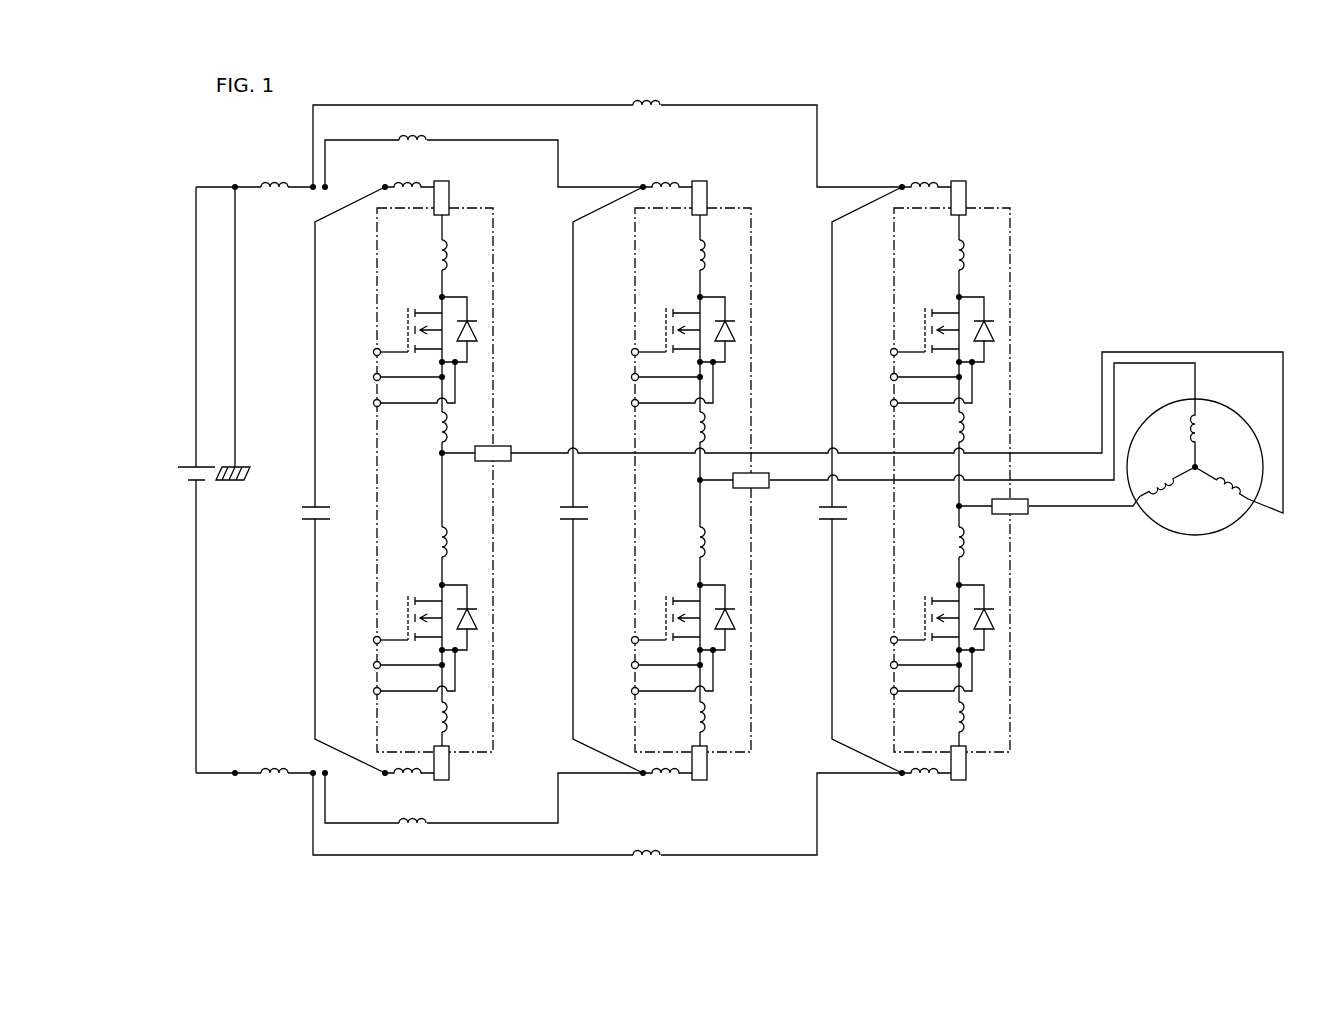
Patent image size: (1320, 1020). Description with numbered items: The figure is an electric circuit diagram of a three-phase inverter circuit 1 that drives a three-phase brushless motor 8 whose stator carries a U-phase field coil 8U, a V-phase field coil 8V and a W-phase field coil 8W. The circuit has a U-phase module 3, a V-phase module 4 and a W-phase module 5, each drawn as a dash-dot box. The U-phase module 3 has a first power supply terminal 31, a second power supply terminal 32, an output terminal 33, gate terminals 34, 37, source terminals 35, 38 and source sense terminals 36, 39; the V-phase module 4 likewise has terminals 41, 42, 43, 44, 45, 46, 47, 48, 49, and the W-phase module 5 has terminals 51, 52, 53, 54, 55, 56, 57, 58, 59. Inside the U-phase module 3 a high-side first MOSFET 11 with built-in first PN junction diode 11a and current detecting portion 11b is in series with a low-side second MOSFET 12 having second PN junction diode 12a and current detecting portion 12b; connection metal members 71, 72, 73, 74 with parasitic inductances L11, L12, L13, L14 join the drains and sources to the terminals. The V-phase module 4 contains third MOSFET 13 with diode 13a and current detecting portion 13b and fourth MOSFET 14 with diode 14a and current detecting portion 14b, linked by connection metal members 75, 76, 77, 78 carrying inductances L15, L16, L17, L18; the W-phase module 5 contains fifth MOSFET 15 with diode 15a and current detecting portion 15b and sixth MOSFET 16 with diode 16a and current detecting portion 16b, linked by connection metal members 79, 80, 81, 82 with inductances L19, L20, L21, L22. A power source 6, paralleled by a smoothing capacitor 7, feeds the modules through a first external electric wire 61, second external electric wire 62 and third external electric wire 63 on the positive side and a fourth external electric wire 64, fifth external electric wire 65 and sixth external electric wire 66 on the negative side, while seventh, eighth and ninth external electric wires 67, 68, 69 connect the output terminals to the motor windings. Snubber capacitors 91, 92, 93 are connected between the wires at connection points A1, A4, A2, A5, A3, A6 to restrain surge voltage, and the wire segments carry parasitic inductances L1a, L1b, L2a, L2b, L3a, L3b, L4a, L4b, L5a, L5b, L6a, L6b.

The three-phase inverter circuit 1 is at (999, 147).
The U-phase module 3 is at (495, 232).
The V-phase module 4 is at (722, 480).
The W-phase module 5 is at (981, 480).
The power source 6 is at (204, 464).
The smoothing capacitor 7 is at (244, 465).
The three-phase brushless motor 8 is at (1226, 403).
The U-phase field coil 8U is at (1222, 522).
The V-phase field coil 8V is at (1181, 413).
The W-phase field coil 8W is at (1166, 522).
The first MOSFET 11 is at (408, 310).
The first PN junction diode 11a is at (478, 330).
The current detecting portion 11b is at (457, 383).
The second MOSFET 12 is at (408, 599).
The second PN junction diode 12a is at (478, 618).
The current detecting portion 12b is at (457, 671).
The third MOSFET 13 is at (677, 316).
The third PN junction diode 13a is at (748, 329).
The current detecting portion 13b is at (748, 381).
The fourth MOSFET 14 is at (677, 603).
The fourth PN junction diode 14a is at (749, 617).
The current detecting portion 14b is at (748, 669).
The fifth MOSFET 15 is at (936, 316).
The fifth PN junction diode 15a is at (1007, 329).
The current detecting portion 15b is at (1007, 381).
The sixth MOSFET 16 is at (936, 603).
The sixth PN junction diode 16a is at (1008, 617).
The current detecting portion 16b is at (1007, 669).
The first power supply terminal 31 is at (451, 189).
The second power supply terminal 32 is at (451, 774).
The output terminal 33 is at (500, 446).
The gate terminal 34 is at (373, 352).
The source terminal 35 is at (373, 377).
The source sense terminal 36 is at (373, 403).
The gate terminal 37 is at (373, 640).
The source terminal 38 is at (373, 665).
The source sense terminal 39 is at (373, 691).
The first power supply terminal 41 is at (721, 195).
The second power supply terminal 42 is at (722, 758).
The output terminal 43 is at (757, 490).
The gate terminal 44 is at (629, 350).
The source terminal 45 is at (647, 375).
The source sense terminal 46 is at (648, 401).
The gate terminal 47 is at (629, 635).
The source terminal 48 is at (647, 662).
The source sense terminal 49 is at (648, 687).
The first power supply terminal 51 is at (980, 195).
The second power supply terminal 52 is at (981, 758).
The output terminal 53 is at (1012, 514).
The gate terminal 54 is at (888, 350).
The source terminal 55 is at (906, 375).
The source sense terminal 56 is at (907, 401).
The gate terminal 57 is at (888, 635).
The source terminal 58 is at (906, 662).
The source sense terminal 59 is at (907, 687).
The first external electric wire 61 is at (240, 183).
The second external electric wire 62 is at (559, 147).
The third external electric wire 63 is at (740, 108).
The fourth external electric wire 64 is at (238, 771).
The fifth external electric wire 65 is at (559, 815).
The sixth external electric wire 66 is at (738, 854).
The seventh external electric wire 67 is at (1031, 452).
The eighth external electric wire 68 is at (1064, 478).
The ninth external electric wire 69 is at (1084, 508).
The connection metal member 71 is at (442, 231).
The connection metal member 72 is at (447, 407).
The connection metal member 73 is at (442, 494).
The connection metal member 74 is at (447, 696).
The connection metal member 75 is at (675, 228).
The connection metal member 76 is at (724, 391).
The connection metal member 77 is at (676, 484).
The connection metal member 78 is at (723, 679).
The connection metal member 79 is at (934, 228).
The connection metal member 80 is at (983, 391).
The connection metal member 81 is at (935, 486).
The connection metal member 82 is at (982, 679).
The capacitor 91 is at (318, 505).
The capacitor 92 is at (601, 480).
The capacitor 93 is at (860, 480).
The connection point A1 is at (383, 185).
The connection point A2 is at (618, 173).
The connection point A3 is at (877, 173).
The connection point A4 is at (383, 776).
The connection point A5 is at (618, 787).
The connection point A6 is at (877, 787).
The inductance L1a is at (275, 171).
The inductance L1b is at (409, 171).
The inductance L2a is at (411, 123).
The inductance L2b is at (667, 171).
The inductance L3a is at (647, 120).
The inductance L3b is at (926, 171).
The inductance L4a is at (275, 788).
The inductance L4b is at (409, 787).
The inductance L5a is at (413, 837).
The inductance L5b is at (667, 787).
The inductance L6a is at (647, 837).
The inductance L6b is at (926, 787).
The inductance L11 is at (419, 255).
The inductance L12 is at (420, 427).
The inductance L13 is at (420, 542).
The inductance L14 is at (419, 717).
The inductance L15 is at (677, 255).
The inductance L16 is at (678, 427).
The inductance L17 is at (678, 542).
The inductance L18 is at (677, 717).
The inductance L19 is at (936, 255).
The inductance L20 is at (937, 427).
The inductance L21 is at (937, 542).
The inductance L22 is at (936, 717).